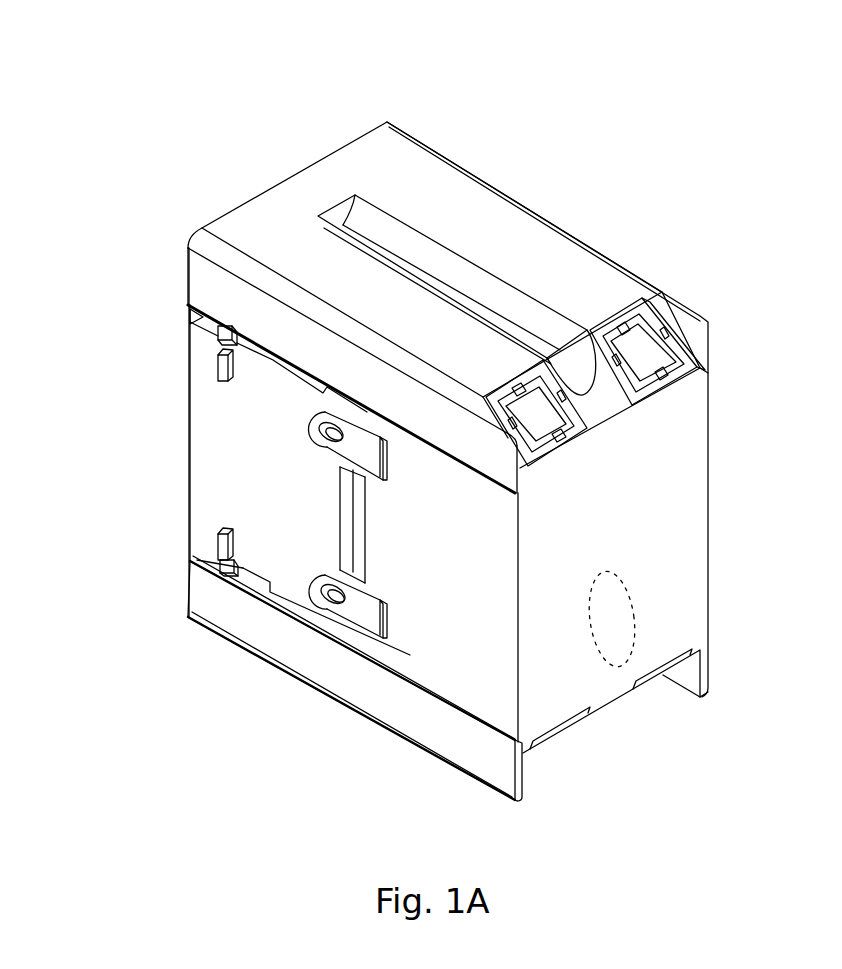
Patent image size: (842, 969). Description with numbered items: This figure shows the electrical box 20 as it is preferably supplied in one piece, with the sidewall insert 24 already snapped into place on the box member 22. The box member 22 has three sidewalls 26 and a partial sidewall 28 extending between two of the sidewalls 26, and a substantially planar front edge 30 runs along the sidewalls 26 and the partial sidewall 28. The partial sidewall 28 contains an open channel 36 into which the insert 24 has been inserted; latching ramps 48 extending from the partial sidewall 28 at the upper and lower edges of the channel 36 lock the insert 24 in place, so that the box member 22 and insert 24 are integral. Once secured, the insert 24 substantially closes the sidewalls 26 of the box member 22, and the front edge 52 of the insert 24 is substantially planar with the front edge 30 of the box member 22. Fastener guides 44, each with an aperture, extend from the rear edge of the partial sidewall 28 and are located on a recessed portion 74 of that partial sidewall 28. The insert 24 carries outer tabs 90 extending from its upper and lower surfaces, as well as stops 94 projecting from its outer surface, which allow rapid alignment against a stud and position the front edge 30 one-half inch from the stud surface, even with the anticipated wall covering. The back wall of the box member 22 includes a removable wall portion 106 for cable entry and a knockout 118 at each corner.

The electrical box 20 is at (574, 105).
The box member 22 is at (548, 218).
The sidewall insert 24 is at (272, 475).
The sidewalls 26 is at (520, 250).
The partial sidewall 28 is at (367, 386).
The front edge 30 is at (291, 177).
The open channel 36 is at (190, 313).
The fastener guide 44 is at (387, 457).
The latching ramps 48 is at (217, 340).
The front edge of insert 52 is at (190, 428).
The recessed portion 74 is at (497, 547).
The outer tabs 90 is at (248, 360).
The stops 94 is at (213, 367).
The removable wall portion 106 is at (620, 598).
The knockout 118 is at (638, 357).